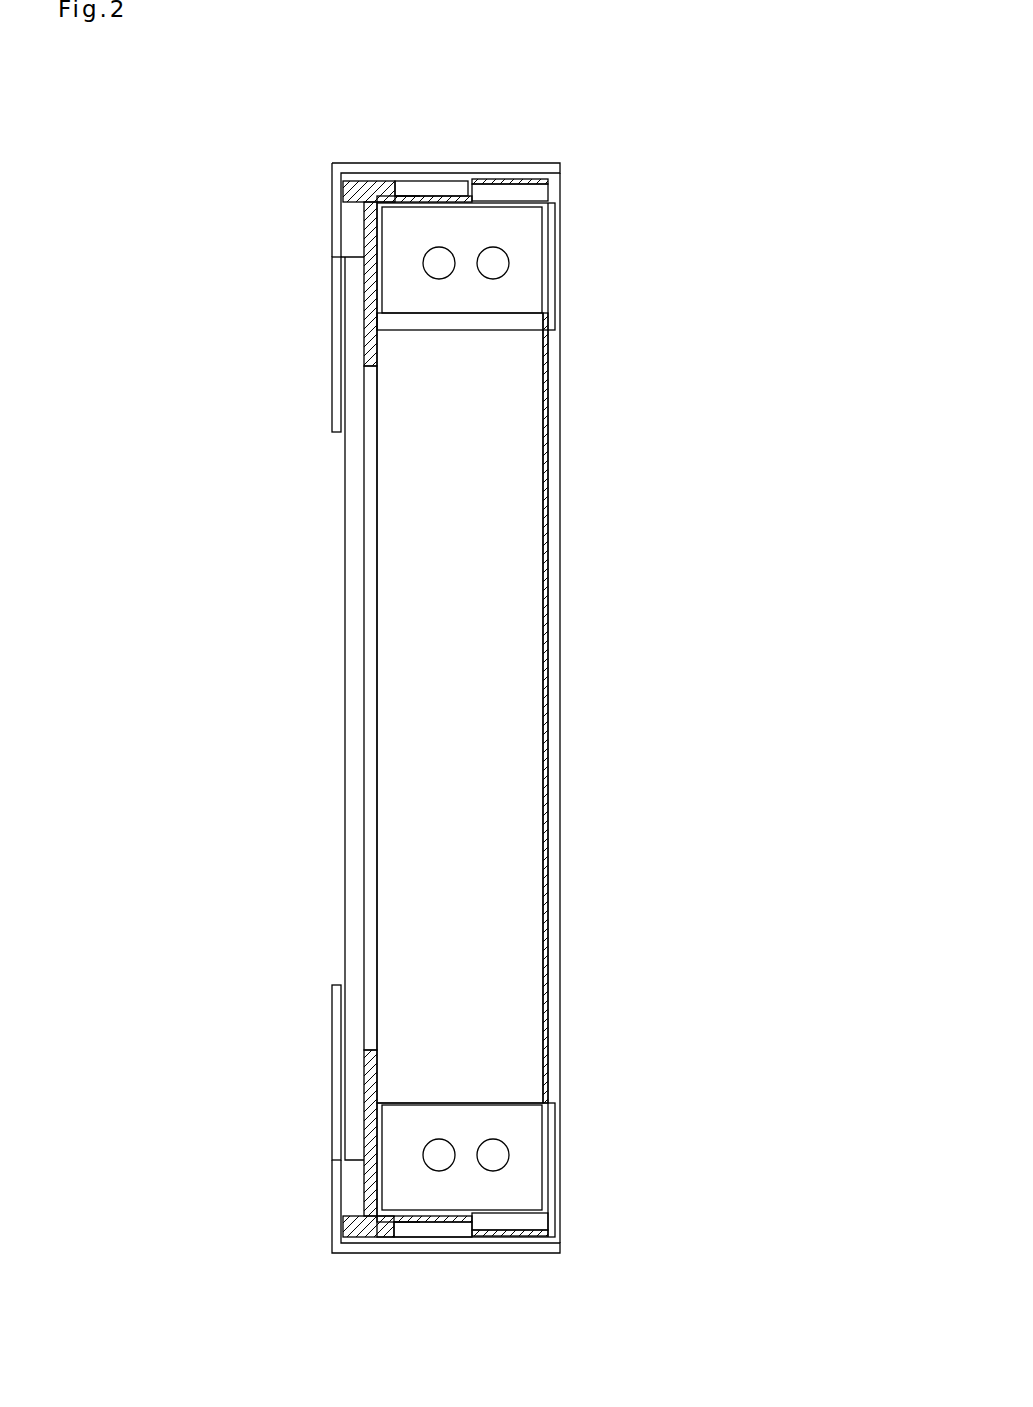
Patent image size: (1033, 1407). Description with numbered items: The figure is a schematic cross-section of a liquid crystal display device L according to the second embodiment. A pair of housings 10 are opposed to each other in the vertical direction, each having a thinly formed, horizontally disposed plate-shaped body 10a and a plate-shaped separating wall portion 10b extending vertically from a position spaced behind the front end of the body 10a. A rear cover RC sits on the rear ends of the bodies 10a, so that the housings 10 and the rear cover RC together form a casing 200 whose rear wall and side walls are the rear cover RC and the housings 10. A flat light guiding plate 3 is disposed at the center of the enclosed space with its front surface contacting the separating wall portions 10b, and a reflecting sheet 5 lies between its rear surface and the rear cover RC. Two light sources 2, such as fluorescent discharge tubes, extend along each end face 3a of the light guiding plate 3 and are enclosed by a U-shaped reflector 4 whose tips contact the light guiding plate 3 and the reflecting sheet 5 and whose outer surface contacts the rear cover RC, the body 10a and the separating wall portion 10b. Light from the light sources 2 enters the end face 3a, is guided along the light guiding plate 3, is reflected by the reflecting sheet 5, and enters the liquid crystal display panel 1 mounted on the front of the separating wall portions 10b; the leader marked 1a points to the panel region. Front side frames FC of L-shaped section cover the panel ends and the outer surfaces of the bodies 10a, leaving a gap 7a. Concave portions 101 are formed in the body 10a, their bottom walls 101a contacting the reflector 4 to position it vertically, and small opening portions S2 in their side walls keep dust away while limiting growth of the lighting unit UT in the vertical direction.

The liquid crystal display panel 1 is at (345, 765).
The frame inner wall 1a is at (345, 545).
The front side frame FC is at (332, 296).
The rear cover RC is at (560, 522).
The housing 10 is at (363, 185).
The separating wall portion 10b is at (367, 235).
The concave portion 101 is at (437, 176).
The bottom wall 101a is at (412, 192).
The opening portion S2 is at (462, 192).
The body 10a is at (512, 180).
The gap 7a is at (550, 177).
The reflector 4 is at (548, 247).
The end face 3a is at (525, 312).
The light guiding plate 3 is at (463, 823).
The reflecting sheet 5 is at (548, 728).
The light source 2 is at (500, 266).
The casing 200 is at (575, 408).
The liquid crystal display device L is at (432, 56).
The lighting unit UT is at (512, 108).